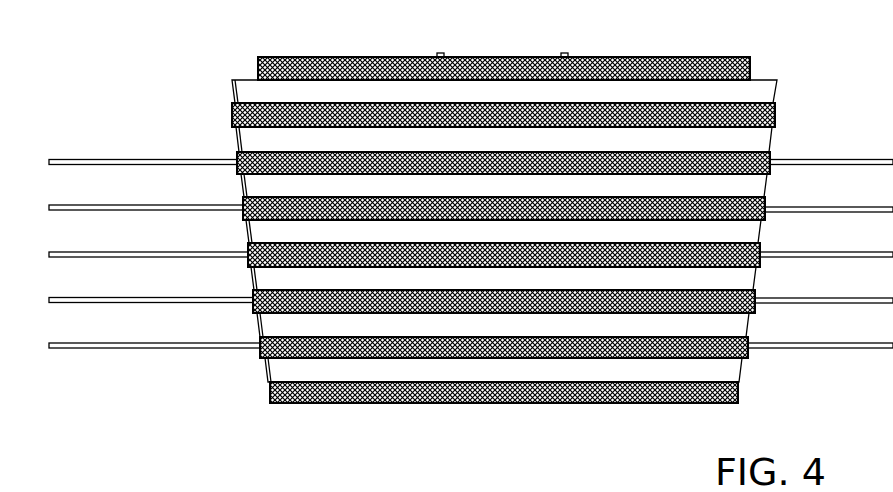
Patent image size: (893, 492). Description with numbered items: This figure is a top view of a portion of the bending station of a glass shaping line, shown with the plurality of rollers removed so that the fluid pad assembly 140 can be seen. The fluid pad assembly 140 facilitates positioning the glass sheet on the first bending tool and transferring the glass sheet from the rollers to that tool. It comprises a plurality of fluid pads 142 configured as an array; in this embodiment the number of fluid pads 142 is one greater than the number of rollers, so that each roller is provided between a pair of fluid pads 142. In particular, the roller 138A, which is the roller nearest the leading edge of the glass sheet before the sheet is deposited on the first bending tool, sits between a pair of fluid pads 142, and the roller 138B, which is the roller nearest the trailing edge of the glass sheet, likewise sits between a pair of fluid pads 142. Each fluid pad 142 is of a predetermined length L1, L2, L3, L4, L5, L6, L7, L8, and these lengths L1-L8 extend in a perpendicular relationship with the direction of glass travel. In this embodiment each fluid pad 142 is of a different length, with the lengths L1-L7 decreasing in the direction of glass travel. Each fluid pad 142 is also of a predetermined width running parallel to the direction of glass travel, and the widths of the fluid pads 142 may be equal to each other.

The fluid pad assembly 140 is at (128, 42).
The fluid pad 142 is at (237, 158).
The roller 138A is at (306, 370).
The roller 138B is at (307, 95).
The length L1 is at (538, 415).
The length L2 is at (740, 361).
The length L3 is at (747, 316).
The length L4 is at (754, 270).
The length L5 is at (759, 223).
The length L6 is at (765, 177).
The length L7 is at (770, 130).
The length L8 is at (774, 82).